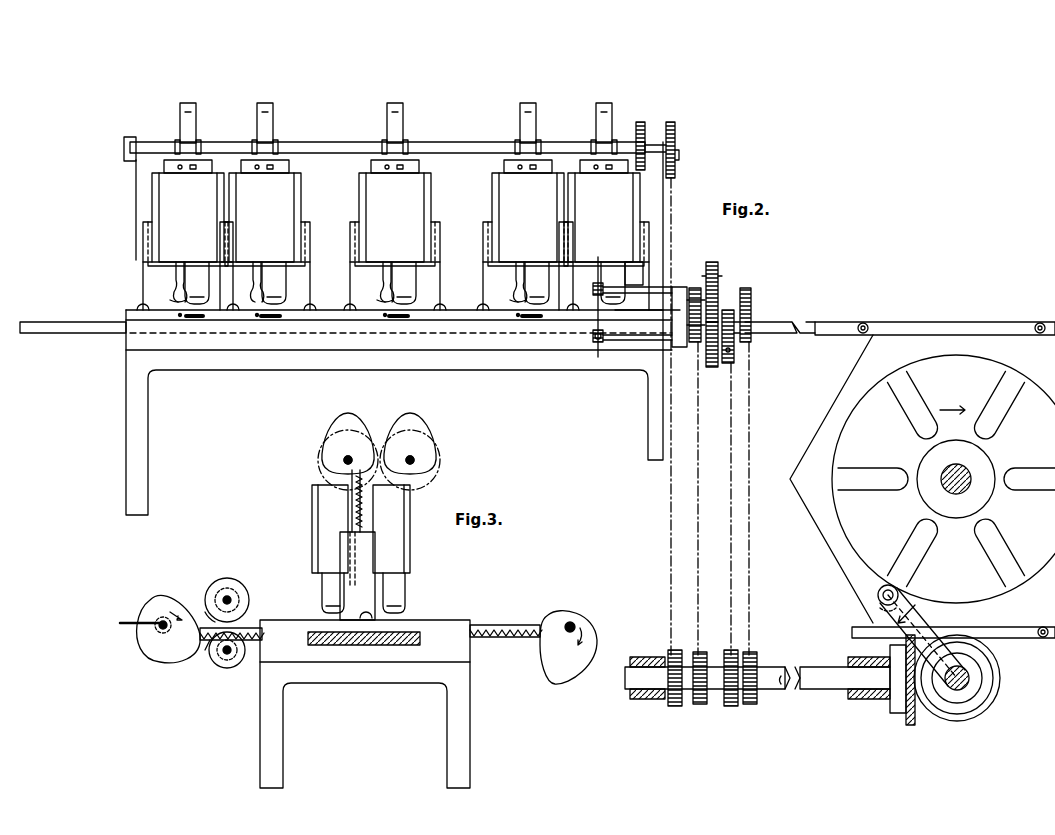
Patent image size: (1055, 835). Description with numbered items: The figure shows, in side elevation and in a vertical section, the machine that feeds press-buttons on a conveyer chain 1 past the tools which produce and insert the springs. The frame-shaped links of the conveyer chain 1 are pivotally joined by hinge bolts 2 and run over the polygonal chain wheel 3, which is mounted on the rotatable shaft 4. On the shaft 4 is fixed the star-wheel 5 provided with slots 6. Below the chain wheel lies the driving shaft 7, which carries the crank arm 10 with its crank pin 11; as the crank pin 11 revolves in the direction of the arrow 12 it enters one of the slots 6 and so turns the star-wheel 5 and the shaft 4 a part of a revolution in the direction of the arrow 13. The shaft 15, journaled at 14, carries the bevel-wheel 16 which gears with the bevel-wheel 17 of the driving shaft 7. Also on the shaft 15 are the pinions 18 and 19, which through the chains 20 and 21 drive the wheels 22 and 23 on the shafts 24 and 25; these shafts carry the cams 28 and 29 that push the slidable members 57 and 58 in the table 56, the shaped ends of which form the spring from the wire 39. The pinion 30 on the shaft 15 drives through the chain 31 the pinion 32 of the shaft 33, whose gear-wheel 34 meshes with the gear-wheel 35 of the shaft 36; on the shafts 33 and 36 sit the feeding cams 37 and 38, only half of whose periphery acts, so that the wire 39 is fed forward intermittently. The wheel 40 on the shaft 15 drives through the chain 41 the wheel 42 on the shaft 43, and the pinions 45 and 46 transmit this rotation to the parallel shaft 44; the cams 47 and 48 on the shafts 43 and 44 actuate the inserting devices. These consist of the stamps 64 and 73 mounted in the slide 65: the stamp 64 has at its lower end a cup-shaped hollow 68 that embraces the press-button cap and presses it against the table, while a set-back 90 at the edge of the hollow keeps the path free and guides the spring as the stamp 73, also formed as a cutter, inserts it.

In FIG. 2, the conveyer chain 1 is at (82, 330).
In FIG. 3, the conveyer chain 1 is at (420, 640).
In FIG. 2, the hinge bolts 2 is at (864, 323).
In FIG. 2, the chain wheel 3 is at (850, 374).
In FIG. 2, the rotatable shaft 4 is at (962, 476).
In FIG. 2, the star-wheel 5 is at (1030, 392).
In FIG. 2, the slots 6 is at (985, 408).
In FIG. 2, the driving shaft 7 is at (970, 676).
In FIG. 2, the crank arm 10 is at (915, 598).
In FIG. 2, the crank pin 11 is at (881, 590).
In FIG. 2, the arrow 12 is at (911, 622).
In FIG. 2, the arrow 13 is at (952, 401).
In FIG. 2, the bearings 14 is at (648, 699).
In FIG. 2, the shaft 15 is at (790, 690).
In FIG. 2, the bevel-wheel 16 is at (912, 714).
In FIG. 2, the bevel-wheel 17 is at (992, 706).
In FIG. 2, the pinion 18 is at (702, 689).
In FIG. 2, the pinion 19 is at (754, 689).
In FIG. 2, the chain 20 is at (698, 496).
In FIG. 2, the chain 21 is at (749, 496).
In FIG. 2, the wheel 22 is at (694, 288).
In FIG. 2, the wheel 23 is at (748, 308).
In FIG. 2, the shaft 24 is at (672, 318).
In FIG. 3, the shaft 24 is at (162, 632).
In FIG. 2, the shaft 25 is at (728, 310).
In FIG. 3, the shaft 25 is at (571, 622).
In FIG. 3, the cam 28 is at (152, 606).
In FIG. 3, the cam 29 is at (545, 652).
In FIG. 2, the pinion 30 is at (734, 688).
In FIG. 2, the chain 31 is at (731, 466).
In FIG. 2, the pinion 32 is at (735, 355).
In FIG. 2, the shaft 33 is at (640, 322).
In FIG. 3, the shaft 33 is at (222, 668).
In FIG. 2, the gear-wheel 34 is at (712, 367).
In FIG. 3, the gear-wheel 34 is at (206, 646).
In FIG. 2, the gear-wheel 35 is at (714, 280).
In FIG. 3, the gear-wheel 35 is at (206, 612).
In FIG. 2, the shaft 36 is at (637, 273).
In FIG. 3, the shaft 36 is at (230, 598).
In FIG. 2, the feeding cam 37 is at (598, 346).
In FIG. 3, the feeding cam 37 is at (223, 652).
In FIG. 2, the feeding cam 38 is at (600, 262).
In FIG. 3, the feeding cam 38 is at (224, 597).
In FIG. 2, the wire 39 is at (349, 327).
In FIG. 3, the wire 39 is at (132, 628).
In FIG. 2, the wheel 40 is at (674, 688).
In FIG. 2, the chain 41 is at (671, 250).
In FIG. 2, the wheel 42 is at (675, 142).
In FIG. 2, the shaft 43 is at (450, 152).
In FIG. 3, the shaft 43 is at (345, 460).
In FIG. 3, the shaft 44 is at (413, 460).
In FIG. 2, the pinion 45 is at (636, 145).
In FIG. 3, the pinion 45 is at (326, 472).
In FIG. 3, the pinion 46 is at (432, 474).
In FIG. 2, the cam 47 is at (270, 138).
In FIG. 3, the cam 47 is at (338, 424).
In FIG. 2, the cam 48 is at (189, 132).
In FIG. 3, the cam 48 is at (418, 425).
In FIG. 3, the table 56 is at (351, 641).
In FIG. 2, the member 57 is at (262, 319).
In FIG. 3, the member 57 is at (250, 626).
In FIG. 3, the member 58 is at (480, 626).
In FIG. 2, the stamp 64 is at (405, 283).
In FIG. 3, the stamp 64 is at (363, 593).
In FIG. 2, the slide 65 is at (393, 235).
In FIG. 3, the slide 65 is at (361, 529).
In FIG. 3, the cup-shaped hollow 68 is at (366, 550).
In FIG. 2, the stamp 73 is at (180, 268).
In FIG. 2, the set-back 90 is at (339, 297).